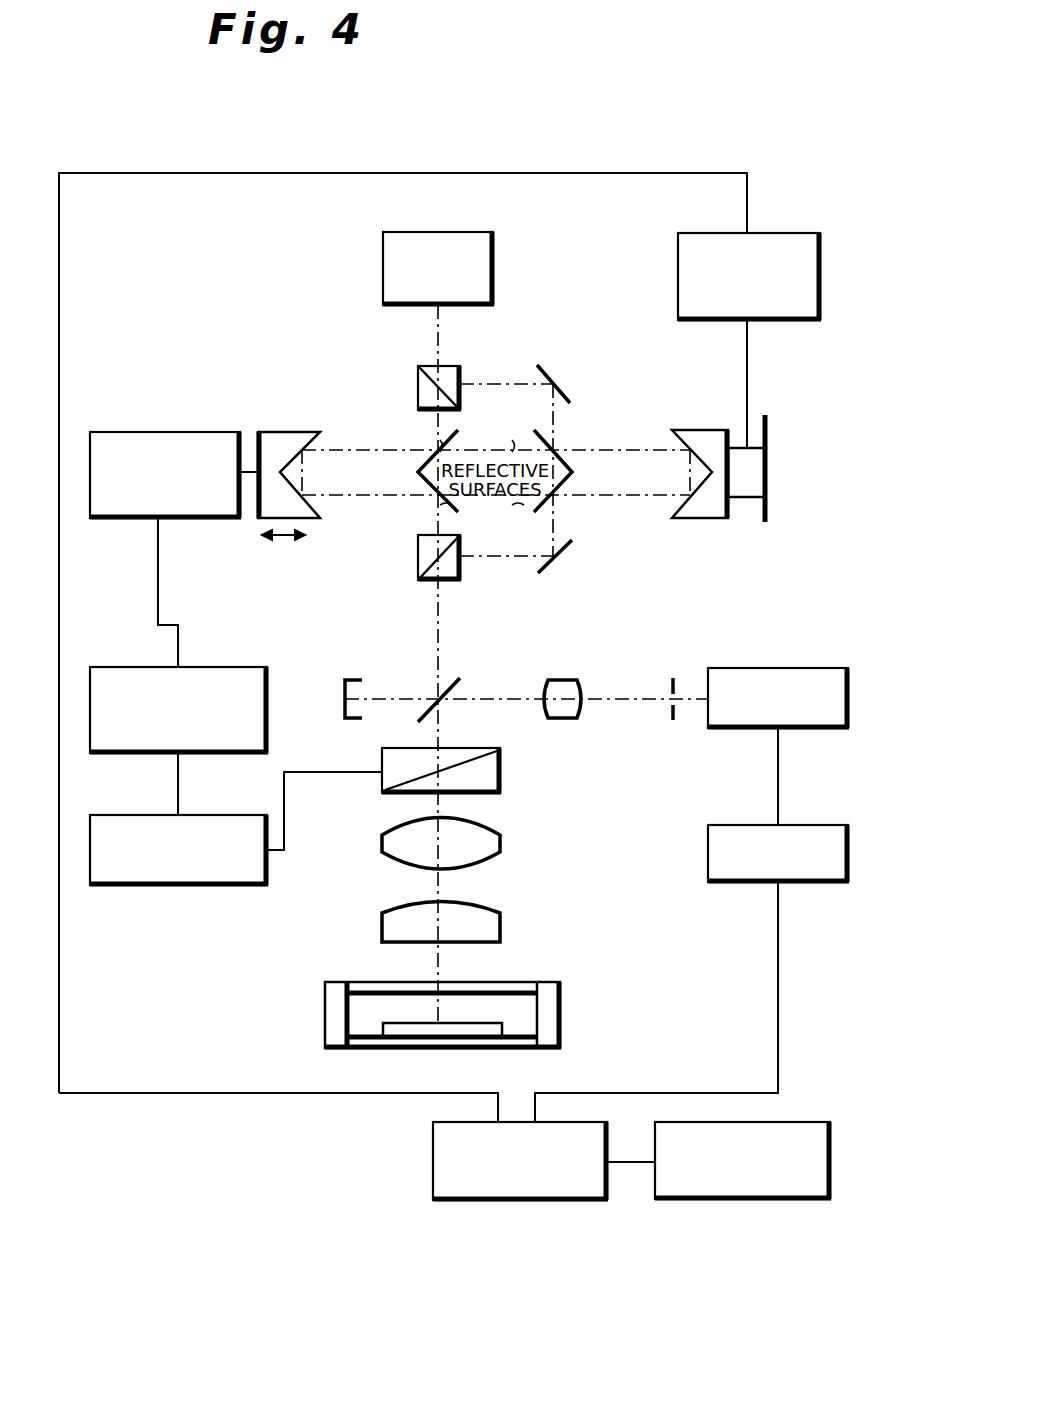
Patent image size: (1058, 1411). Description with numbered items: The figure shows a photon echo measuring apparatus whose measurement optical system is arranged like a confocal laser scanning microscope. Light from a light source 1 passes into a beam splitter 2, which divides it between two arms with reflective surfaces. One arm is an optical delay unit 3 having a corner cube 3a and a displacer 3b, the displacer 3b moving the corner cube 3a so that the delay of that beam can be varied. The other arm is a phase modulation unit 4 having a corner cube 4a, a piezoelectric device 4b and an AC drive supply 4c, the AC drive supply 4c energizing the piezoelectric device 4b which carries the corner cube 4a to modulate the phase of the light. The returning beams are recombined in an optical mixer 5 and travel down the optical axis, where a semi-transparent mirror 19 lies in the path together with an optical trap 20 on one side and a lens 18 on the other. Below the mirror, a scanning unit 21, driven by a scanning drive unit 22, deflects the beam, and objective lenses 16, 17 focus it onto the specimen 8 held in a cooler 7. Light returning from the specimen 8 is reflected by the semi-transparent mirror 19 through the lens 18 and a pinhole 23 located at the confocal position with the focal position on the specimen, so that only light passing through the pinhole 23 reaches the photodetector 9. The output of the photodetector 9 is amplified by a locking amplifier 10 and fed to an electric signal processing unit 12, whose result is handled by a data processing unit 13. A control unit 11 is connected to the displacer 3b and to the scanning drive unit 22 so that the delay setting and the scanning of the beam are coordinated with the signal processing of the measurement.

The light source 1 is at (383, 282).
The beam splitter 2 is at (418, 380).
The optical delay unit 3 is at (205, 443).
The corner cube 3a is at (275, 463).
The displacer 3b is at (194, 432).
The phase modulation unit 4 is at (756, 401).
The corner cube 4a is at (712, 430).
The piezoelectric device 4b is at (745, 498).
The AC drive supply 4c is at (820, 260).
The optical mixer 5 is at (418, 565).
The cooler 7 is at (560, 1005).
The specimen 8 is at (401, 1029).
The photodetector 9 is at (785, 668).
The locking amplifier 10 is at (825, 825).
The control unit 11 is at (244, 667).
The electric signal processing unit 12 is at (433, 1166).
The data processing unit 13 is at (830, 1176).
The objective lens 16 is at (500, 846).
The objective lens 17 is at (500, 930).
The lens 18 is at (567, 678).
The semi-transparent mirror 19 is at (454, 678).
The optical trap 20 is at (352, 678).
The scanning unit 21 is at (500, 783).
The scanning drive unit 22 is at (143, 815).
The pinhole 23 is at (670, 714).